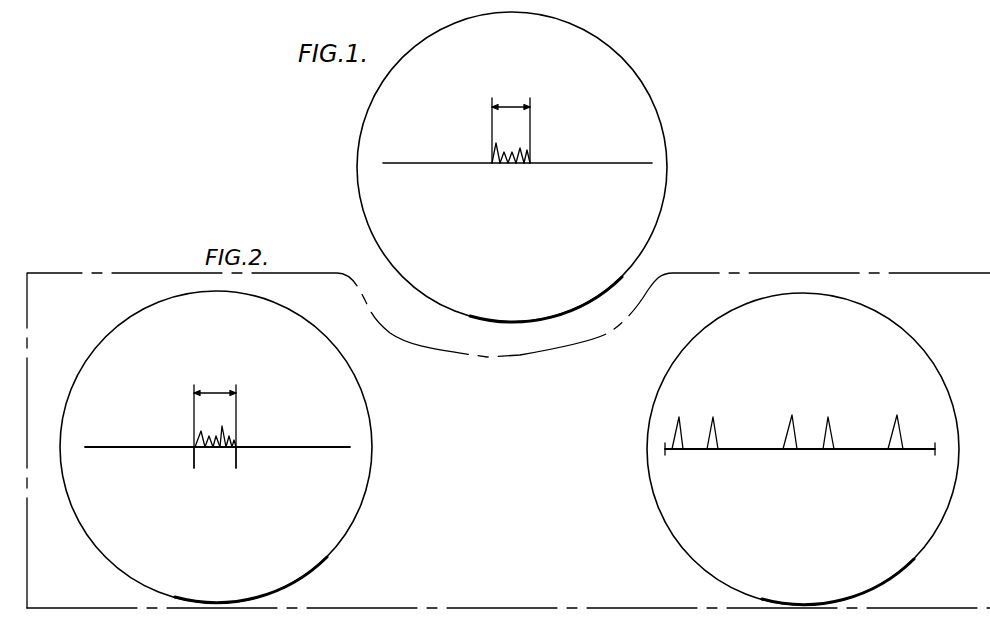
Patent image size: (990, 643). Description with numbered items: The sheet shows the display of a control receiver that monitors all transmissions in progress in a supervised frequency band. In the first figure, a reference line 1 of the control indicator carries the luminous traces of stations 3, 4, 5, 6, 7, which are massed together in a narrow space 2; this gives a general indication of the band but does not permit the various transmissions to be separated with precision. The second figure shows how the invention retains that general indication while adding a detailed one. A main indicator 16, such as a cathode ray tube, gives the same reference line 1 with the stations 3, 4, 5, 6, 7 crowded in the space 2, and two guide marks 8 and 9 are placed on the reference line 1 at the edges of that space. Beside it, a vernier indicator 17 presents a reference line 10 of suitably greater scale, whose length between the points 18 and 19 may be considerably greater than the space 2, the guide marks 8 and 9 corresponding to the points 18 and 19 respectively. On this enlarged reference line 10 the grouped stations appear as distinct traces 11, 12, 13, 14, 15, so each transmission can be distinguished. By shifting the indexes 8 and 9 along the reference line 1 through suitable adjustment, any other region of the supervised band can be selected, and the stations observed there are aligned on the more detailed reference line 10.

In FIG. 1, the reference line 1 is at (414, 164).
In FIG. 2, the reference line 1 is at (152, 446).
In FIG. 1, the space 2 is at (511, 126).
In FIG. 2, the space 2 is at (215, 420).
In FIG. 1, the trace of station 3 is at (495, 150).
In FIG. 2, the trace of station 3 is at (201, 431).
In FIG. 1, the trace of station 4 is at (502, 150).
In FIG. 2, the trace of station 4 is at (219, 430).
In FIG. 1, the trace of station 5 is at (507, 152).
In FIG. 2, the trace of station 5 is at (222, 427).
In FIG. 1, the trace of station 6 is at (512, 152).
In FIG. 2, the trace of station 6 is at (232, 429).
In FIG. 1, the trace of station 7 is at (518, 152).
In FIG. 2, the trace of station 7 is at (235, 441).
In FIG. 2, the guide mark 8 is at (194, 466).
In FIG. 2, the guide mark 9 is at (237, 467).
In FIG. 2, the reference line 10 is at (775, 450).
In FIG. 2, the distinct trace 11 is at (679, 417).
In FIG. 2, the distinct trace 12 is at (713, 417).
In FIG. 2, the distinct trace 13 is at (792, 415).
In FIG. 2, the distinct trace 14 is at (828, 417).
In FIG. 2, the distinct trace 15 is at (897, 415).
In FIG. 2, the main indicator 16 is at (353, 377).
In FIG. 2, the vernier indicator 17 is at (945, 383).
In FIG. 2, the end point of reference line 18 is at (665, 452).
In FIG. 2, the end point of reference line 19 is at (935, 452).